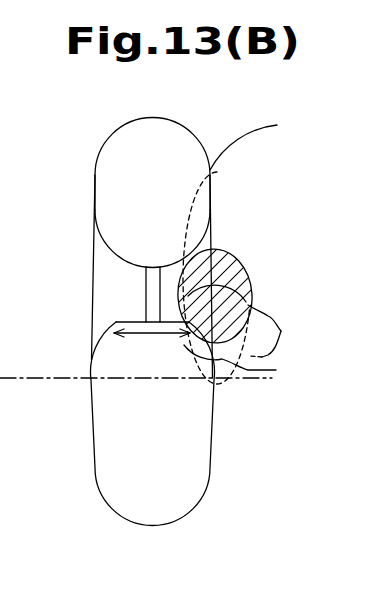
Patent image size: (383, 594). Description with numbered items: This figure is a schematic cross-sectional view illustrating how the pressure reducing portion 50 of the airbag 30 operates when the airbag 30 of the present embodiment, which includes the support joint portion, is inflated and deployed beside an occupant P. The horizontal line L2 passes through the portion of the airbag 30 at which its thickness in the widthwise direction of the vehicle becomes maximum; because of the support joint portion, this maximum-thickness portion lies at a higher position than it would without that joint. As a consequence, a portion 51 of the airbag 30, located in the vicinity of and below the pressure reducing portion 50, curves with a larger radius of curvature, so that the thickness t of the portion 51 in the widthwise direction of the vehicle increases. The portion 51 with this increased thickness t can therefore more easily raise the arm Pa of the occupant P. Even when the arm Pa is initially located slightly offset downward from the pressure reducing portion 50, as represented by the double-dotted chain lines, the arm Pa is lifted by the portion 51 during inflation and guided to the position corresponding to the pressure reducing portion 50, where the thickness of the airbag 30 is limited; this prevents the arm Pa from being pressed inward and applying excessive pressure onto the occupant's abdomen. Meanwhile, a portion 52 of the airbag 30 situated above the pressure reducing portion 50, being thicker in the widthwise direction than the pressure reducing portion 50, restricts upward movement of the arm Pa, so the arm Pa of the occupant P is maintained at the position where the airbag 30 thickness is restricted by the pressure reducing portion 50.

The airbag 30 is at (95, 188).
The pressure reducing portion 50 is at (112, 286).
The portion 51 is at (246, 364).
The portion 52 is at (204, 243).
The occupant P is at (258, 144).
The contact area Pt is at (262, 277).
The arm Pa is at (281, 331).
The horizontal line L2 is at (252, 386).
The thickness t is at (153, 337).